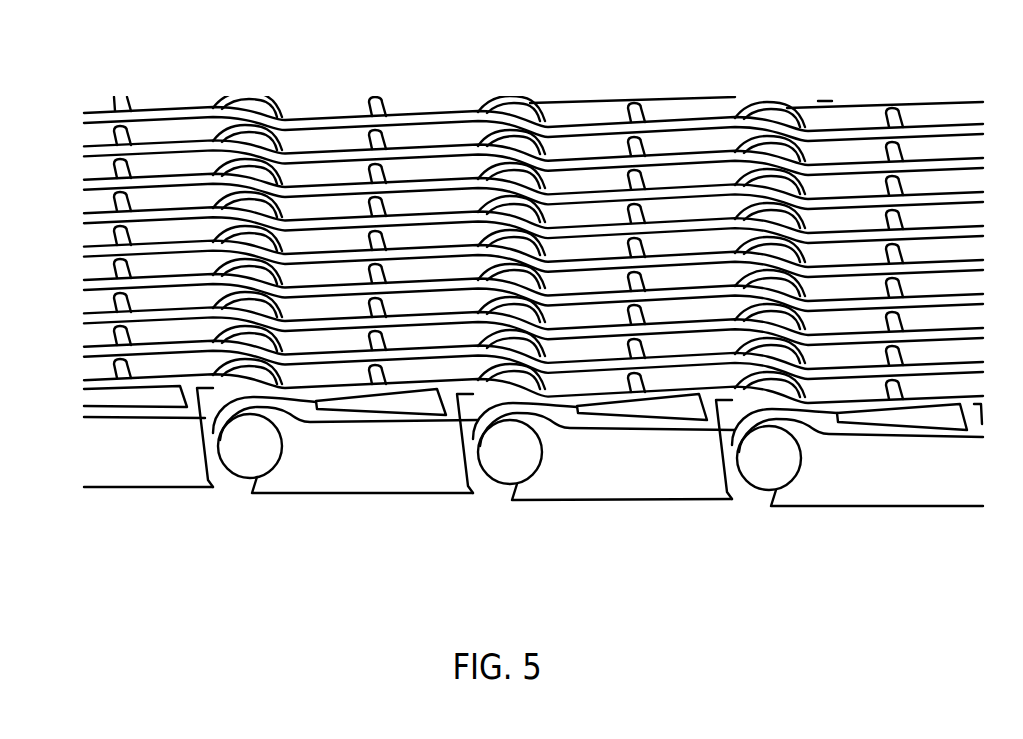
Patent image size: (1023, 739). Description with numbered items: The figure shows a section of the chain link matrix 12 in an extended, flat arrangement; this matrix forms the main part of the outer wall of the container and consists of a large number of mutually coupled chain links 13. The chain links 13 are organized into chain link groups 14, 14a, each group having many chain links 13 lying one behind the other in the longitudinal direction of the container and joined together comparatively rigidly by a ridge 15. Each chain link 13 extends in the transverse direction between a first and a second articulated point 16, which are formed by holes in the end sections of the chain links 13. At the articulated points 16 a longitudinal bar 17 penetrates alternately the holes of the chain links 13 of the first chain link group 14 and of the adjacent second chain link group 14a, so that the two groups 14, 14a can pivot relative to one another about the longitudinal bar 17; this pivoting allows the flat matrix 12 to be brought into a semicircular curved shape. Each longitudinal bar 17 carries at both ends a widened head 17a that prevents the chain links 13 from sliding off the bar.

The chain link matrix 12 is at (533, 312).
The chain link 13 is at (333, 397).
The chain link group 14 is at (388, 516).
The second chain link group 14a is at (597, 516).
The ridge 15 is at (377, 380).
The articulated point 16 is at (512, 95).
The longitudinal bar 17 is at (500, 465).
The widened head 17a is at (745, 473).